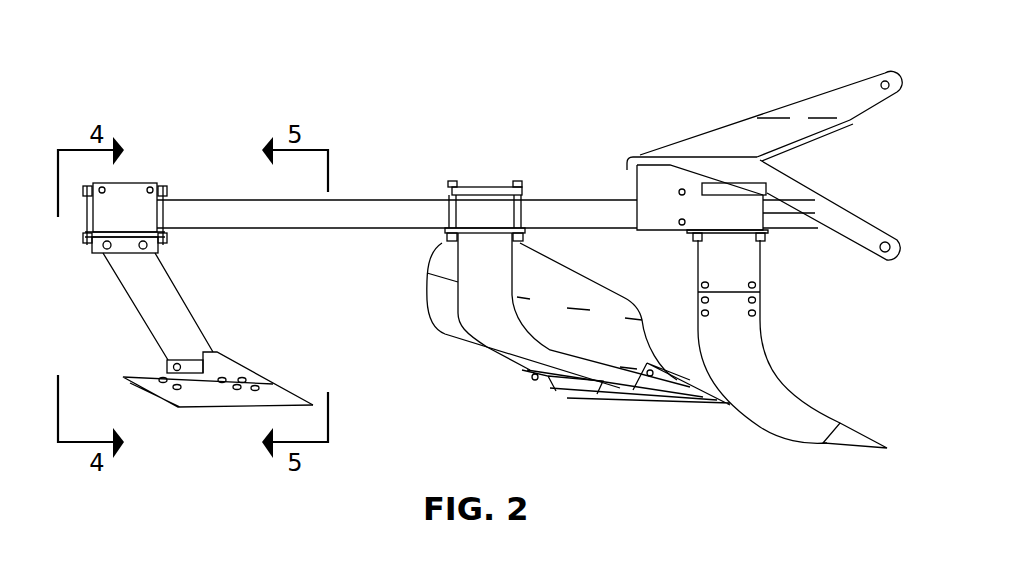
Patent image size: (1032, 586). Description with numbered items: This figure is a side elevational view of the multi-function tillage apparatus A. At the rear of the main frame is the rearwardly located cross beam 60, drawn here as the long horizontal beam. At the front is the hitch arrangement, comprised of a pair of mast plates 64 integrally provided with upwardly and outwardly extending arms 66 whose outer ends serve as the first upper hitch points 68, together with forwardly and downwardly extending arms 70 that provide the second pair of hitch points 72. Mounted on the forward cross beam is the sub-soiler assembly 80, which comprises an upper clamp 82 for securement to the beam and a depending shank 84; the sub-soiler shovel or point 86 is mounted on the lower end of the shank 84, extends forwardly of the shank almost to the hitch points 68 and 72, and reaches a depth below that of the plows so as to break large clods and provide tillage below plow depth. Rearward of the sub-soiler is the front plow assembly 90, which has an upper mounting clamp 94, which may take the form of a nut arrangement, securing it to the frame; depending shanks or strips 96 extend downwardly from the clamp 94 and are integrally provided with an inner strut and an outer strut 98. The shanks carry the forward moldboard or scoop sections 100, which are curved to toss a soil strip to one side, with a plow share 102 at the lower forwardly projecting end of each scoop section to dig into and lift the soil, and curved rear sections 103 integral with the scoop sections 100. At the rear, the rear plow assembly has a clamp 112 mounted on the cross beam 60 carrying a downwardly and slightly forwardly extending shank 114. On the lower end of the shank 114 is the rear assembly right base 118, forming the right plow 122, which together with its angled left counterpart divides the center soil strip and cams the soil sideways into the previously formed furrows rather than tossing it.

The tillage apparatus A is at (572, 78).
The cross beam 60 is at (88, 215).
The mast plates 64 is at (720, 111).
The upwardly and outwardly extending arms 66 is at (832, 117).
The first upper hitch points 68 is at (893, 87).
The forwardly and downwardly extending arms 70 is at (838, 213).
The second hitch points 72 is at (885, 253).
The sub-soiler assembly 80 is at (810, 348).
The upper clamp 82 is at (783, 215).
The shank 84 is at (698, 275).
The point 86 is at (865, 428).
The front plow assembly 90 is at (462, 358).
The upper mounting clamp 94 is at (485, 192).
The shanks 96 is at (482, 267).
The strut 98 is at (505, 337).
The moldboard or scoop sections 100 is at (553, 278).
The plow share 102 is at (725, 407).
The curved rear sections 103 is at (438, 305).
The clamp 112 is at (128, 192).
The shank 114 is at (190, 312).
The rear assembly right base 118 is at (233, 370).
The right plow 122 is at (237, 398).